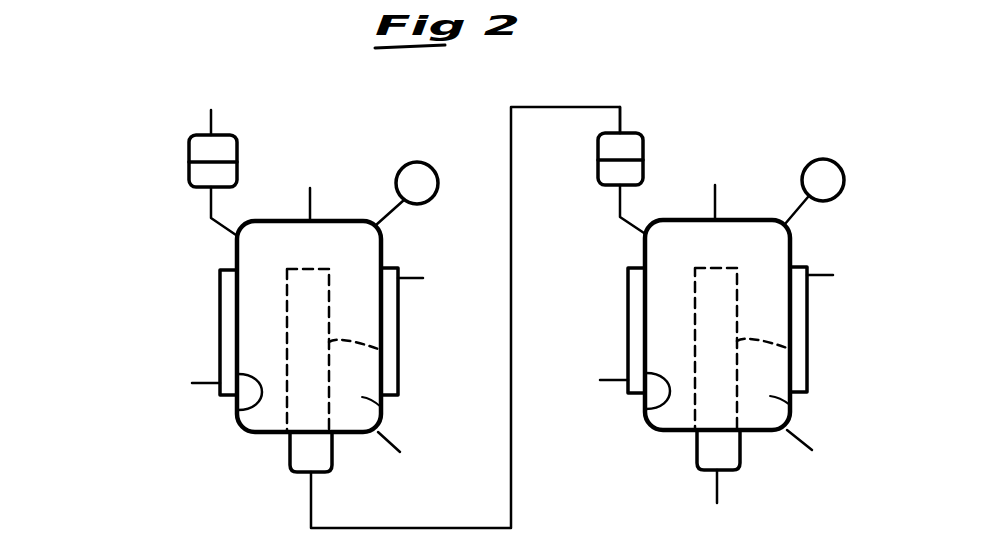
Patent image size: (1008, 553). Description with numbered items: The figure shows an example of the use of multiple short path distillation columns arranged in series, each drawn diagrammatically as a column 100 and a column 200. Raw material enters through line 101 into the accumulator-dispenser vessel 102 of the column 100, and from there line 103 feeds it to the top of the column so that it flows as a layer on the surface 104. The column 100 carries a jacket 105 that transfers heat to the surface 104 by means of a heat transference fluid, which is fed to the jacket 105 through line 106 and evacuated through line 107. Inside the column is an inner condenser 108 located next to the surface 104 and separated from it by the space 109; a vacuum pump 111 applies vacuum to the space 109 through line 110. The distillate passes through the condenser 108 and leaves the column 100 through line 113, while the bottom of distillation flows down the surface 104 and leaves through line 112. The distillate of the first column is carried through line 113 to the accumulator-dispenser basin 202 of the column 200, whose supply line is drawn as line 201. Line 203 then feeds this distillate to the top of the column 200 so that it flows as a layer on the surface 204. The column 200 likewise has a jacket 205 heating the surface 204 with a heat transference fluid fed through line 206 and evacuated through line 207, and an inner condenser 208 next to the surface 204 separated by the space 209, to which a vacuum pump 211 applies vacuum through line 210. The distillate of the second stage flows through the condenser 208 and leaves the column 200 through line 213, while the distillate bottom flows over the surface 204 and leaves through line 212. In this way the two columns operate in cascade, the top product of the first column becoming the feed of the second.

The column 100 is at (310, 202).
The line 101 is at (208, 113).
The accumulator-dispenser vessel 102 is at (189, 161).
The line 103 is at (220, 232).
The surface 104 is at (240, 408).
The jacket 105 is at (220, 300).
The line 106 is at (196, 381).
The line 107 is at (423, 279).
The inner condenser 108 is at (381, 350).
The space 109 is at (383, 407).
The line 110 is at (395, 211).
The vacuum pump 111 is at (403, 165).
The line 112 is at (310, 500).
The line 113 is at (393, 452).
The column 200 is at (715, 202).
The line 201 is at (625, 110).
The accumulator-dispenser basin 202 is at (598, 155).
The line 203 is at (630, 232).
The surface 204 is at (648, 406).
The jacket 205 is at (628, 300).
The line 206 is at (606, 380).
The line 207 is at (833, 276).
The inner condenser 208 is at (790, 349).
The space 209 is at (792, 405).
The line 210 is at (803, 210).
The vacuum pump 211 is at (810, 164).
The line 212 is at (717, 497).
The line 213 is at (793, 450).